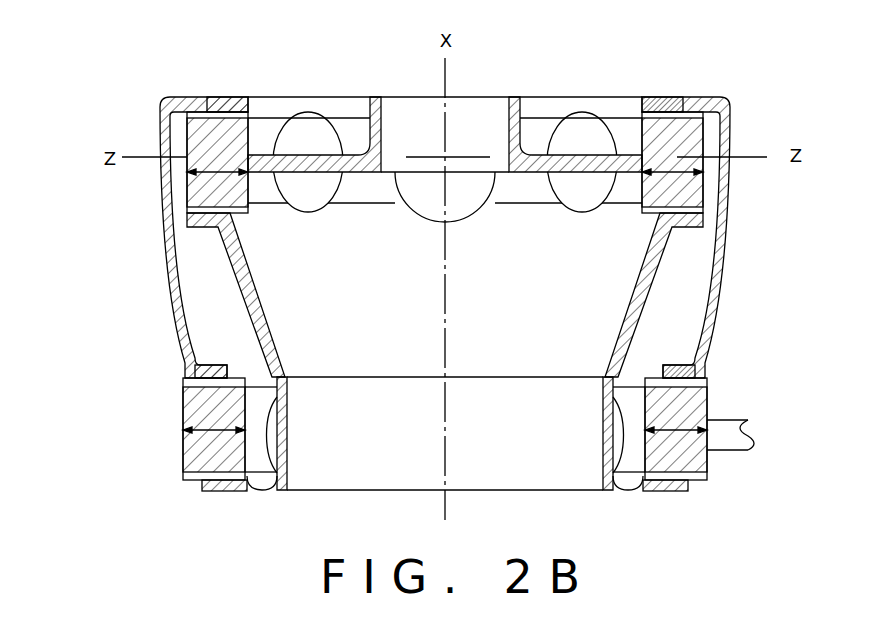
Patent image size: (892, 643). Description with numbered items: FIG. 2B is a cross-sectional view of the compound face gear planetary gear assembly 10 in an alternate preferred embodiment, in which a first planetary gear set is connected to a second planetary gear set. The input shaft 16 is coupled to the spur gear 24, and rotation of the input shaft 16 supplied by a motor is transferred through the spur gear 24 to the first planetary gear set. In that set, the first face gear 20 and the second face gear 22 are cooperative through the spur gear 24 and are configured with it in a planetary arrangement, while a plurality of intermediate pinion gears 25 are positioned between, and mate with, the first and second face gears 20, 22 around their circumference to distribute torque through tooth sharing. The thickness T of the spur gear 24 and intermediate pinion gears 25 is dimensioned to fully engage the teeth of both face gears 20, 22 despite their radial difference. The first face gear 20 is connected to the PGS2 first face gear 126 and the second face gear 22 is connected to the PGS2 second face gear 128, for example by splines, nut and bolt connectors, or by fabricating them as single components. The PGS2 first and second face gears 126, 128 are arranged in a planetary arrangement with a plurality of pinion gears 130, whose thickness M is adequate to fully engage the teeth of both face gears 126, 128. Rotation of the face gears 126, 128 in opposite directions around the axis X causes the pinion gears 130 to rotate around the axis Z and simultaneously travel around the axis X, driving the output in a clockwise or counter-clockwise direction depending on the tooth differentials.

The face gear planetary gear assembly 10 is at (742, 80).
The input shaft 16 is at (722, 446).
The PGS1 first face gear 20 is at (192, 369).
The PGS1 second face gear 22 is at (228, 492).
The spur gear 24 is at (697, 405).
The intermediate pinion gears 25 is at (207, 462).
The PGS2 first face gear 126 is at (234, 97).
The PGS2 second face gear 128 is at (200, 227).
The pinion gears 130 is at (200, 191).